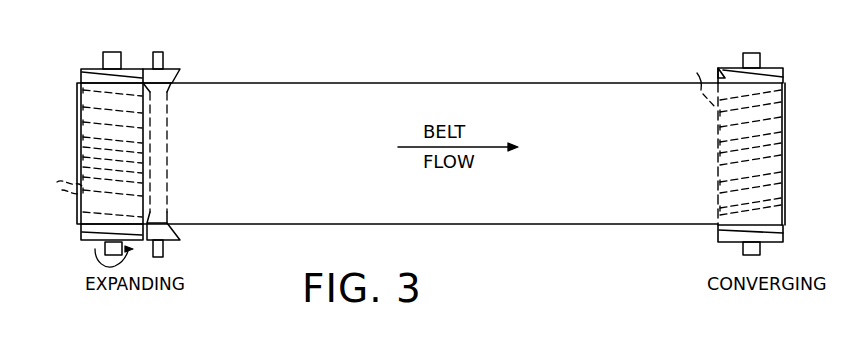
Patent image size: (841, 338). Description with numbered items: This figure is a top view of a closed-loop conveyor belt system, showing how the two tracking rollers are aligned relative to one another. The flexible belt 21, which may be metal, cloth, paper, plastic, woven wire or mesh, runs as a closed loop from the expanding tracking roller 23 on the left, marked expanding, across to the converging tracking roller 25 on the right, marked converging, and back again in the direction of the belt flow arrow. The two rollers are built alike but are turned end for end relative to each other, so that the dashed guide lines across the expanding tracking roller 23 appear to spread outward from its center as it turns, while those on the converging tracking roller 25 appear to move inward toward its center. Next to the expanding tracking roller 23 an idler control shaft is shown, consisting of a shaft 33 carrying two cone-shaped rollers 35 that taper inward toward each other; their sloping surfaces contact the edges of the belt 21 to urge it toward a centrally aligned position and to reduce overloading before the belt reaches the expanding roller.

The belt 21 is at (444, 93).
The expanding tracking roller 23 is at (82, 68).
The converging tracking roller 25 is at (786, 70).
The shaft 33 is at (164, 53).
The cone-shaped rollers 35 is at (165, 237).